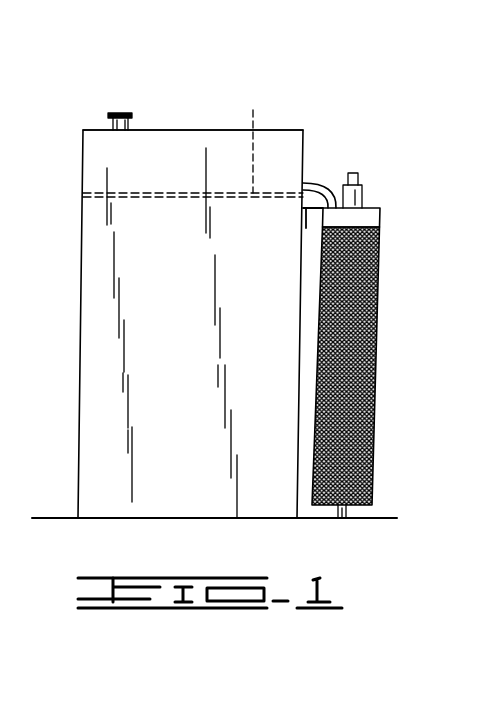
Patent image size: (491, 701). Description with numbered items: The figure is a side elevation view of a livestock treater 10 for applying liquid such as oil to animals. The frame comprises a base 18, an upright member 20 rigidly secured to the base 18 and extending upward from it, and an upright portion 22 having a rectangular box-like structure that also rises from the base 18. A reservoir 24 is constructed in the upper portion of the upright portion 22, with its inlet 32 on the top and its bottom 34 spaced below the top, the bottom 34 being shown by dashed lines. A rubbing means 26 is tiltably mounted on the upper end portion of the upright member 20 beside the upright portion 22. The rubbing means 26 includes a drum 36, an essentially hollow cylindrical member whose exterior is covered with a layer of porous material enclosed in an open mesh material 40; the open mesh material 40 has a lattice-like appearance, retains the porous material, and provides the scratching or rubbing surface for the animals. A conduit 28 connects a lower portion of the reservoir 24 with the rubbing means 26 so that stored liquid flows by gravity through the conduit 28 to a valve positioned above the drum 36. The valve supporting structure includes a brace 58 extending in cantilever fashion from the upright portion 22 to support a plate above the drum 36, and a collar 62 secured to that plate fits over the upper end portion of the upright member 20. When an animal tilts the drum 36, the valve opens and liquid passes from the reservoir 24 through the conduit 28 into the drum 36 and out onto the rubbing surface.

The livestock treater 10 is at (110, 90).
The base 18 is at (98, 519).
The upright member 20 is at (348, 517).
The upright portion 22 is at (93, 330).
The reservoir 24 is at (175, 147).
The rubbing means 26 is at (388, 283).
The conduit 28 is at (318, 183).
The inlet 32 is at (120, 113).
The bottom 34 is at (254, 110).
The drum 36 is at (374, 220).
The open mesh material 40 is at (368, 342).
The brace 58 is at (307, 216).
The collar 62 is at (357, 198).